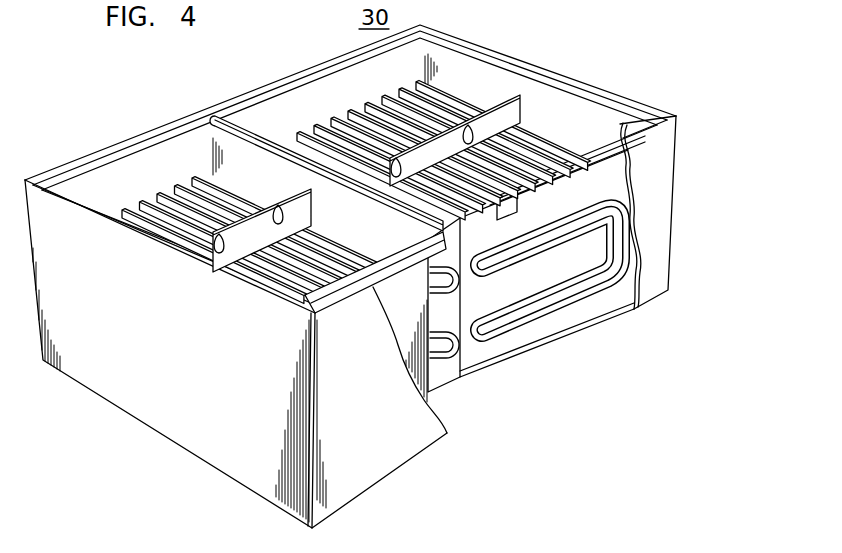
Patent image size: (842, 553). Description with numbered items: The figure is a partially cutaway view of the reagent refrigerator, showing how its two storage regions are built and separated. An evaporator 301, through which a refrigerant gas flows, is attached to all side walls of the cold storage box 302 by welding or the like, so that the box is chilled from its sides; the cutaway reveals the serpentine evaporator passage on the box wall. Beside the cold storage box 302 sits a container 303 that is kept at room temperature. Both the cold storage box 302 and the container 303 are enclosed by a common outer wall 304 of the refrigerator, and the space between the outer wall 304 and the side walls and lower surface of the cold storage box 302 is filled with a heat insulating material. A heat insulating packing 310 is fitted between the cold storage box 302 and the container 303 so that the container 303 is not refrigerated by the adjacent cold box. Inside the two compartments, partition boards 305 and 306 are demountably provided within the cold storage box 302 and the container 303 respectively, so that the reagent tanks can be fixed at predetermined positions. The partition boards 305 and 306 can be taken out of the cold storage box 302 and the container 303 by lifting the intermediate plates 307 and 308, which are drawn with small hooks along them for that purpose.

The evaporator 301 is at (518, 336).
The cold storage box 302 is at (568, 78).
The container 303 is at (106, 186).
The outer wall 304 is at (154, 424).
The partition board 305 is at (462, 100).
The partition board 306 is at (195, 177).
The intermediate plate 307 is at (441, 136).
The intermediate plate 308 is at (226, 250).
The heat insulating packing 310 is at (232, 118).